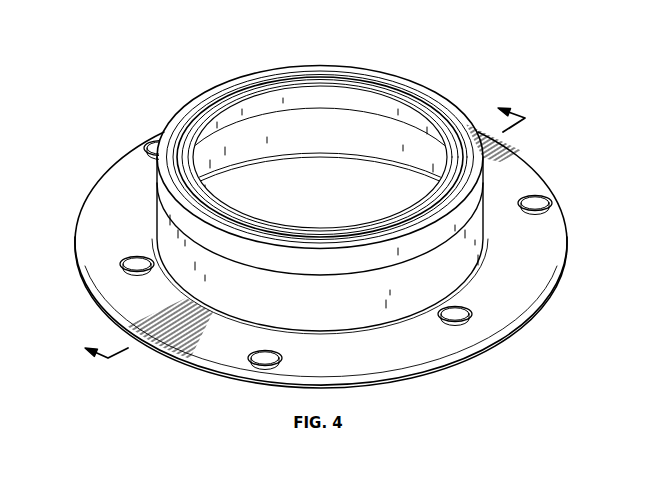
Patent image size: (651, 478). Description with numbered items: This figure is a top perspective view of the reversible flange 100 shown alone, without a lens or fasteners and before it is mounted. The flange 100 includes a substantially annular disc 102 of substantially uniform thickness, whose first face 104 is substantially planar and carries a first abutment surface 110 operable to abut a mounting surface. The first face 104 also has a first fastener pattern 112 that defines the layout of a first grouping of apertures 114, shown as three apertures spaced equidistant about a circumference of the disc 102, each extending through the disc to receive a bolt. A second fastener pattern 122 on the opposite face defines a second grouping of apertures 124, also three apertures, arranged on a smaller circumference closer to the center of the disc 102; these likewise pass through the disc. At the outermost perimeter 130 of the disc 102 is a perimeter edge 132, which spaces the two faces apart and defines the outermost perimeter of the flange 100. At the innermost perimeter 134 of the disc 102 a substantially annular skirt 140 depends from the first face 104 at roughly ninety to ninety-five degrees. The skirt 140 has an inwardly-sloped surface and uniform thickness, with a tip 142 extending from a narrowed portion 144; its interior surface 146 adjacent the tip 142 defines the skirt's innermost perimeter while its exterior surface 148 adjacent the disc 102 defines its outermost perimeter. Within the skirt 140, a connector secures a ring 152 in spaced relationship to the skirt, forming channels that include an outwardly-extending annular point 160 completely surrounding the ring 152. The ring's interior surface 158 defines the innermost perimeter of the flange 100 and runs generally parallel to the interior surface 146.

The reversible flange 100 is at (160, 34).
The annular disc 102 is at (90, 182).
The first face 104 is at (118, 164).
The first abutment surface 110 is at (217, 362).
The first fastener pattern 112 is at (163, 139).
The first grouping of apertures 114 is at (147, 141).
The second fastener pattern 122 is at (141, 259).
The second grouping of apertures 124 is at (128, 258).
The outermost perimeter 130 is at (85, 292).
The perimeter edge 132 is at (167, 354).
The innermost perimeter 134 is at (170, 277).
The skirt 140 is at (379, 324).
The tip 142 is at (428, 98).
The narrowed portion 144 is at (474, 199).
The interior surface of the skirt 146 is at (240, 160).
The exterior surface of the skirt 148 is at (483, 238).
The ring 152 is at (281, 113).
The interior surface of the ring 158 is at (392, 113).
The outwardly-extending annular point 160 is at (451, 123).